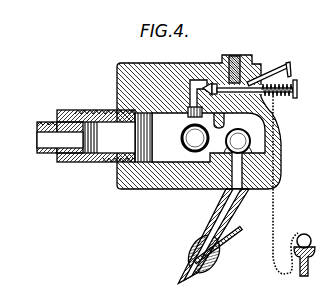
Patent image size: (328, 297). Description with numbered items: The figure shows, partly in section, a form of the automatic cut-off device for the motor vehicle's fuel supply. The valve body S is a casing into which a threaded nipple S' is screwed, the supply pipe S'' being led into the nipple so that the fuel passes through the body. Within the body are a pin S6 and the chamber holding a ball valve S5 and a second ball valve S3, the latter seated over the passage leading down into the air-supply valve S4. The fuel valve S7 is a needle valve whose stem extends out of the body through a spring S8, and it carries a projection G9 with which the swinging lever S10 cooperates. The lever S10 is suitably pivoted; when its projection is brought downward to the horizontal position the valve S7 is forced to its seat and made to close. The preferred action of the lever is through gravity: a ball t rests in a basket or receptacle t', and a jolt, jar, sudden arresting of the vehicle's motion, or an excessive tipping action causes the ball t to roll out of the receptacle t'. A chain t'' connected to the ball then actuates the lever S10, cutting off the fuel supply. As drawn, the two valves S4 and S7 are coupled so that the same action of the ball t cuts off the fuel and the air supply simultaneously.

The valve body S is at (206, 122).
The threaded nipple S' is at (96, 127).
The supply pipe S'' is at (50, 130).
The projection G9 is at (167, 63).
The fuel valve S7 is at (196, 80).
The pin S6 is at (234, 56).
The swinging lever S10 is at (283, 70).
The spring S8 is at (281, 96).
The ball valve S5 is at (193, 138).
The ball valve S3 is at (238, 137).
The air-supply valve S4 is at (218, 236).
The chain t'' is at (272, 192).
The ball t is at (308, 237).
The basket or receptacle t' is at (306, 261).